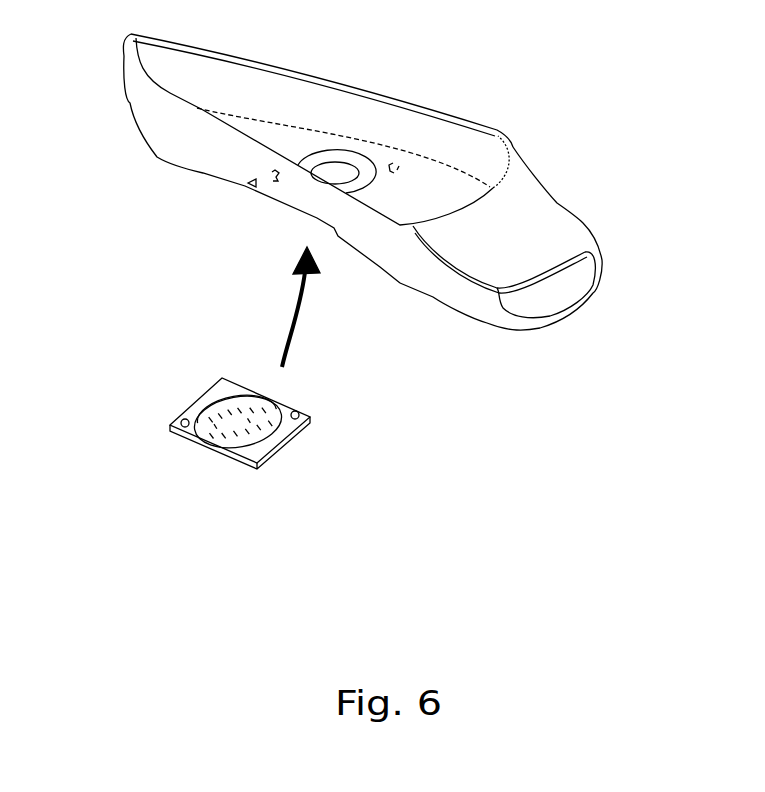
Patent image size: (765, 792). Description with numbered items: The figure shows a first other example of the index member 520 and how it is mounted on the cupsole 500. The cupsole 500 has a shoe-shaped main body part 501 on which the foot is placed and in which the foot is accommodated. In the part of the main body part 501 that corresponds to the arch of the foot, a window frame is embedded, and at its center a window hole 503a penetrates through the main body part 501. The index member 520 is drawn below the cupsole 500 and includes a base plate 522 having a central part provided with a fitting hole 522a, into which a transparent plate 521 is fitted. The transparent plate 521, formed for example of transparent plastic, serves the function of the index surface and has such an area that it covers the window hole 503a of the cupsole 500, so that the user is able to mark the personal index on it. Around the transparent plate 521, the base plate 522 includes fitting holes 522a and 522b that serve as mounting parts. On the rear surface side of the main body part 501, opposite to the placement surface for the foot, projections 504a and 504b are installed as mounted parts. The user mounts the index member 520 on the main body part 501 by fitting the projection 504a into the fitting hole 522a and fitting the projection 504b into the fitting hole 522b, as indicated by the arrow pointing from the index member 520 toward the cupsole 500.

The cupsole 500 is at (583, 101).
The main body part 501 is at (160, 120).
The window hole 503a is at (337, 166).
The projection 504a is at (398, 166).
The projection 504b is at (268, 182).
The index member 520 is at (325, 463).
The transparent plate 521 is at (230, 434).
The base plate 522 is at (222, 380).
The fitting hole 522a is at (301, 408).
The fitting hole 522b is at (178, 418).